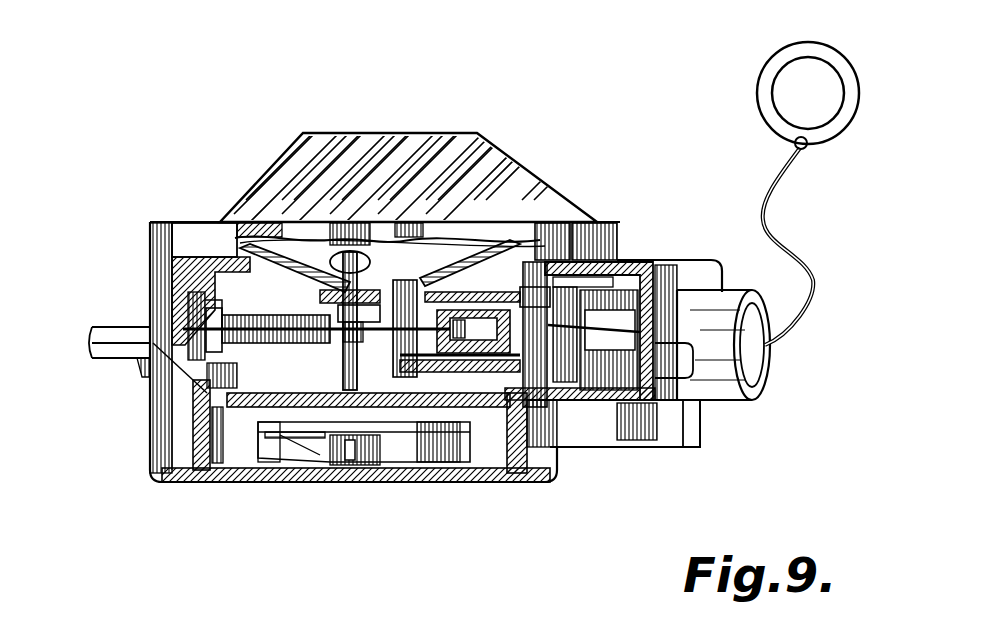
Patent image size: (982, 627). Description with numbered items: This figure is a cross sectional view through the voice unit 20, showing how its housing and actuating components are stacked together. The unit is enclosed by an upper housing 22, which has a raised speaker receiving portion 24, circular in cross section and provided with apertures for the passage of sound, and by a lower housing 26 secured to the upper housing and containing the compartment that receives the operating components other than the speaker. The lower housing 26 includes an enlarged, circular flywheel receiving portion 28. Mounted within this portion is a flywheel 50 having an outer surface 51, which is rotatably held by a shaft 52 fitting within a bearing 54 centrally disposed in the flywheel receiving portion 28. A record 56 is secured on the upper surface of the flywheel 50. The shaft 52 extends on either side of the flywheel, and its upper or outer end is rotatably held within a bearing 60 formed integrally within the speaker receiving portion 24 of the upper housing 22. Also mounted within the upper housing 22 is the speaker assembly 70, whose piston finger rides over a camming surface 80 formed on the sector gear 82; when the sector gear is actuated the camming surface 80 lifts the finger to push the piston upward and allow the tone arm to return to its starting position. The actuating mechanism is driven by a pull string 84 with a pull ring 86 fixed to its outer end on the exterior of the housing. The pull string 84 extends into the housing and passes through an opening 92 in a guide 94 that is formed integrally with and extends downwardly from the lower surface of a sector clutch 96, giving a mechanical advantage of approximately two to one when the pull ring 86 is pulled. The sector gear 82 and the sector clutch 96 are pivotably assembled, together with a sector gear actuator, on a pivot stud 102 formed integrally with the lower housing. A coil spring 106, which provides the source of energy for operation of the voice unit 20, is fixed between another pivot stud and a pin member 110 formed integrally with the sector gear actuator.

The voice unit 20 is at (428, 86).
The upper housing 22 is at (165, 226).
The speaker receiving portion 24 is at (521, 150).
The lower housing 26 is at (150, 440).
The flywheel receiving portion 28 is at (473, 481).
The flywheel 50 is at (233, 450).
The outer surface 51 is at (185, 440).
The shaft 52 is at (338, 288).
The bearing 54 is at (330, 457).
The record 56 is at (230, 400).
The bearing 60 is at (383, 168).
The speaker assembly 70 is at (495, 246).
The camming surface 80 is at (338, 342).
The sector gear 82 is at (557, 472).
The pull string 84 is at (790, 235).
The pull ring 86 is at (757, 98).
The opening 92 is at (278, 296).
The guide 94 is at (376, 340).
The sector clutch 96 is at (577, 240).
The pivot stud 102 is at (515, 355).
The coil spring 106 is at (167, 263).
The pin member 110 is at (385, 255).